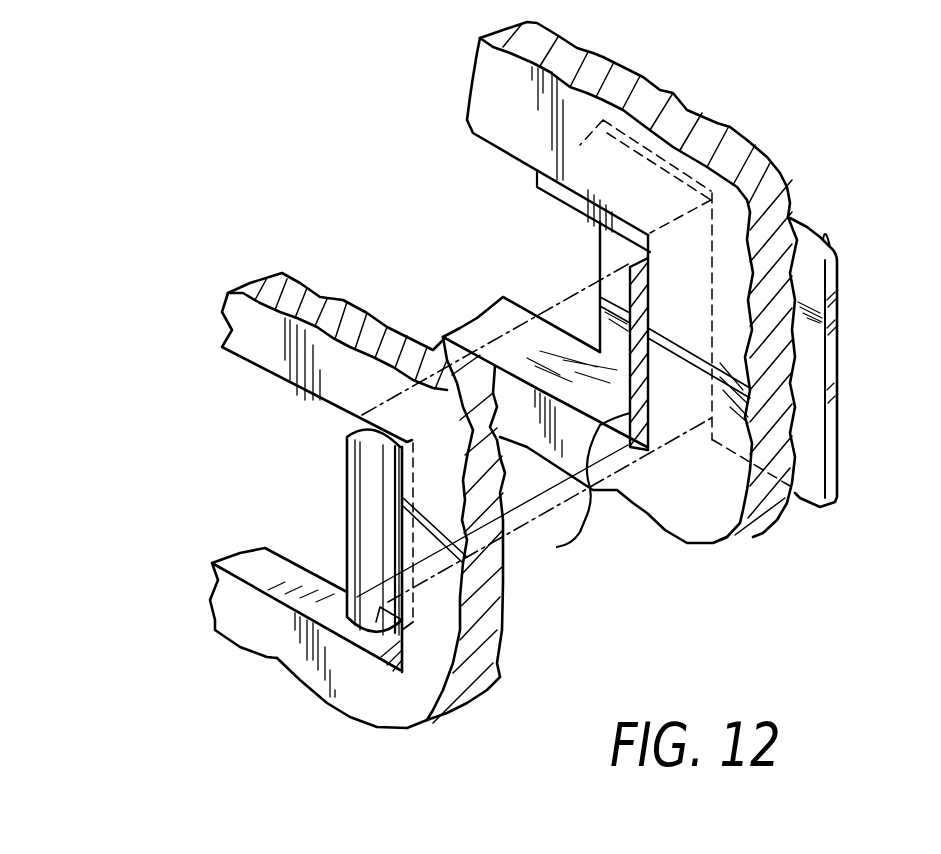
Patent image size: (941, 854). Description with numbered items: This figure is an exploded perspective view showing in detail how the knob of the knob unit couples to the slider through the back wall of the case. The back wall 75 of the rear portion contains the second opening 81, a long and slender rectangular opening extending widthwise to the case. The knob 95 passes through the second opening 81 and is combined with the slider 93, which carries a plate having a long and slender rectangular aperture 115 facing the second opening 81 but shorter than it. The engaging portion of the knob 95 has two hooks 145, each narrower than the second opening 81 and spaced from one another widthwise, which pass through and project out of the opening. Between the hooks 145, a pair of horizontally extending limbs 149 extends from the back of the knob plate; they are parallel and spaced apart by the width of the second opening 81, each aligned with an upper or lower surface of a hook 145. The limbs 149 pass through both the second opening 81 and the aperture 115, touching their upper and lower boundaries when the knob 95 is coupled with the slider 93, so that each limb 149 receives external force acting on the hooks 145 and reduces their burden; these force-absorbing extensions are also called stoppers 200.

The second opening 81 is at (481, 272).
The horizontally extending limbs 149 is at (620, 187).
The stoppers 200 is at (708, 212).
The knob 95 is at (840, 405).
The back wall 75 is at (663, 510).
The hooks 145 is at (571, 492).
The slider 93 is at (287, 652).
The aperture 115 is at (322, 455).